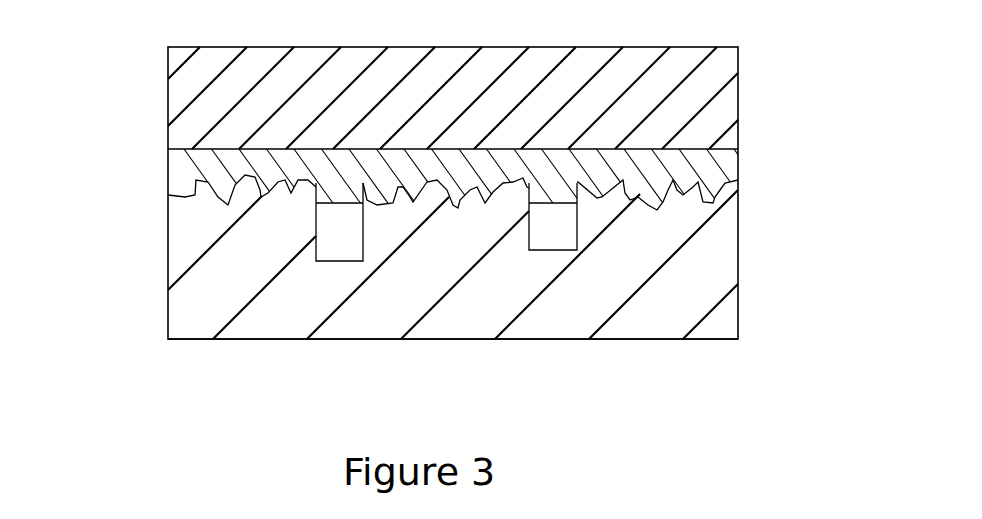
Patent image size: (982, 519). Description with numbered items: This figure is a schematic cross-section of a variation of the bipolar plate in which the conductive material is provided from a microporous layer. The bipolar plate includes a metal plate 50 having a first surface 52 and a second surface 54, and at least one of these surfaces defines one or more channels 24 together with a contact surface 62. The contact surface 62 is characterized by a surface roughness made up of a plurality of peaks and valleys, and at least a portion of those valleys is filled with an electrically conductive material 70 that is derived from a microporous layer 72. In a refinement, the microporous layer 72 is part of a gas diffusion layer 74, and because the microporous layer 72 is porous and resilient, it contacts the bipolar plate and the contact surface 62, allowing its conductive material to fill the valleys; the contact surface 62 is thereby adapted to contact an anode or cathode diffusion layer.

The channels 24 is at (332, 238).
The metal plate 50 is at (235, 305).
The first surface 52 is at (236, 183).
The second surface 54 is at (282, 339).
The contact surface 62 is at (197, 178).
The electrically conductive material 70 is at (700, 167).
The microporous layer 72 is at (237, 163).
The gas diffusion layer 74 is at (747, 198).